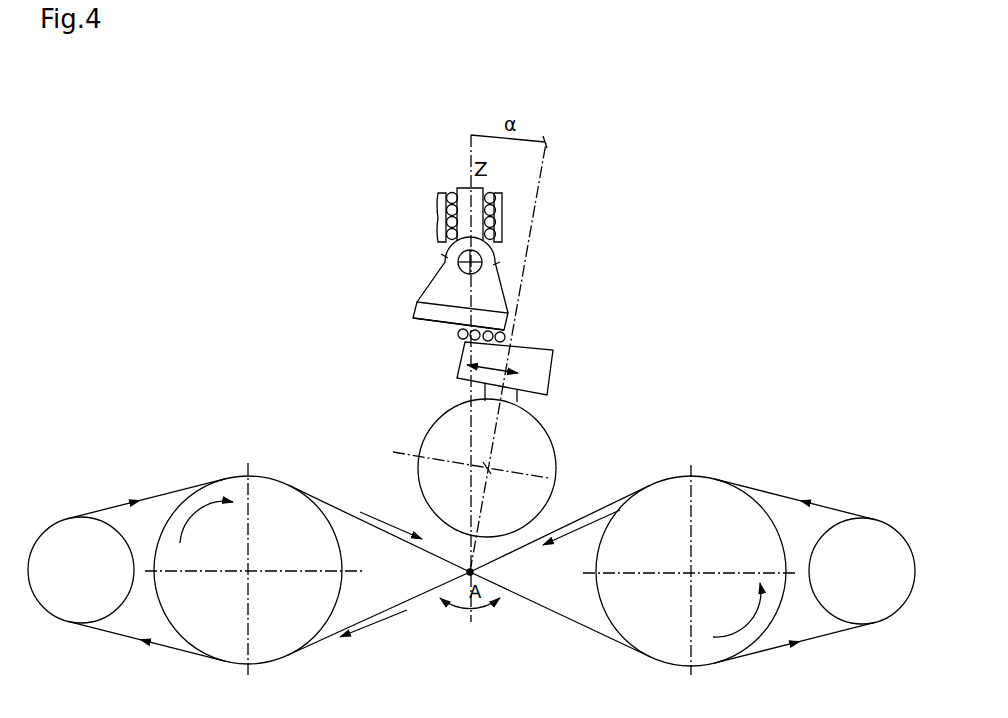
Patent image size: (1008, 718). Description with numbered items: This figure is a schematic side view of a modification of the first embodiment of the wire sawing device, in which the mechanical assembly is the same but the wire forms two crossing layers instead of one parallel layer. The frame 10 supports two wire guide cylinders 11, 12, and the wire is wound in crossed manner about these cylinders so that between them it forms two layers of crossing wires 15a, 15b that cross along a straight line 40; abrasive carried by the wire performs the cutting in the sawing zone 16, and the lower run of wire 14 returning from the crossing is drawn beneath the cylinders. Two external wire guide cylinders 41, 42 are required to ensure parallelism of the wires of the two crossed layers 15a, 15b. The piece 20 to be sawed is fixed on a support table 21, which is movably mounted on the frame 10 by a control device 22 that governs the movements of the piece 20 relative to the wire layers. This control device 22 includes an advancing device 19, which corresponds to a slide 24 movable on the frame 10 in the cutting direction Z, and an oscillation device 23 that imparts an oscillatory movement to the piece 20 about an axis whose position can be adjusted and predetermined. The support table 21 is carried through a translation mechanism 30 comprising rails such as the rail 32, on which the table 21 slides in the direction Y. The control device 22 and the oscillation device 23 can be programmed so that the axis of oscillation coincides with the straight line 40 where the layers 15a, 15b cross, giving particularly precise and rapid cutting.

The frame 10 is at (503, 212).
The wire guide cylinder 11 is at (262, 497).
The wire guide cylinder 12 is at (748, 518).
The belt lower run 14 is at (323, 642).
The layer of crossing wires 15a is at (432, 553).
The layer of crossing wires 15b is at (517, 553).
The sawing zone 16 is at (410, 518).
The advancing device 19 is at (497, 235).
The piece to be sawed 20 is at (547, 433).
The support table 21 is at (540, 368).
The control device 22 is at (428, 258).
The oscillation device 23 is at (438, 333).
The slide 24 is at (480, 192).
The translation mechanism 30 is at (507, 338).
The rail 32 is at (497, 323).
The straight line of crossing 40 is at (472, 577).
The external wire guide cylinder 41 is at (65, 623).
The external wire guide cylinder 42 is at (882, 622).